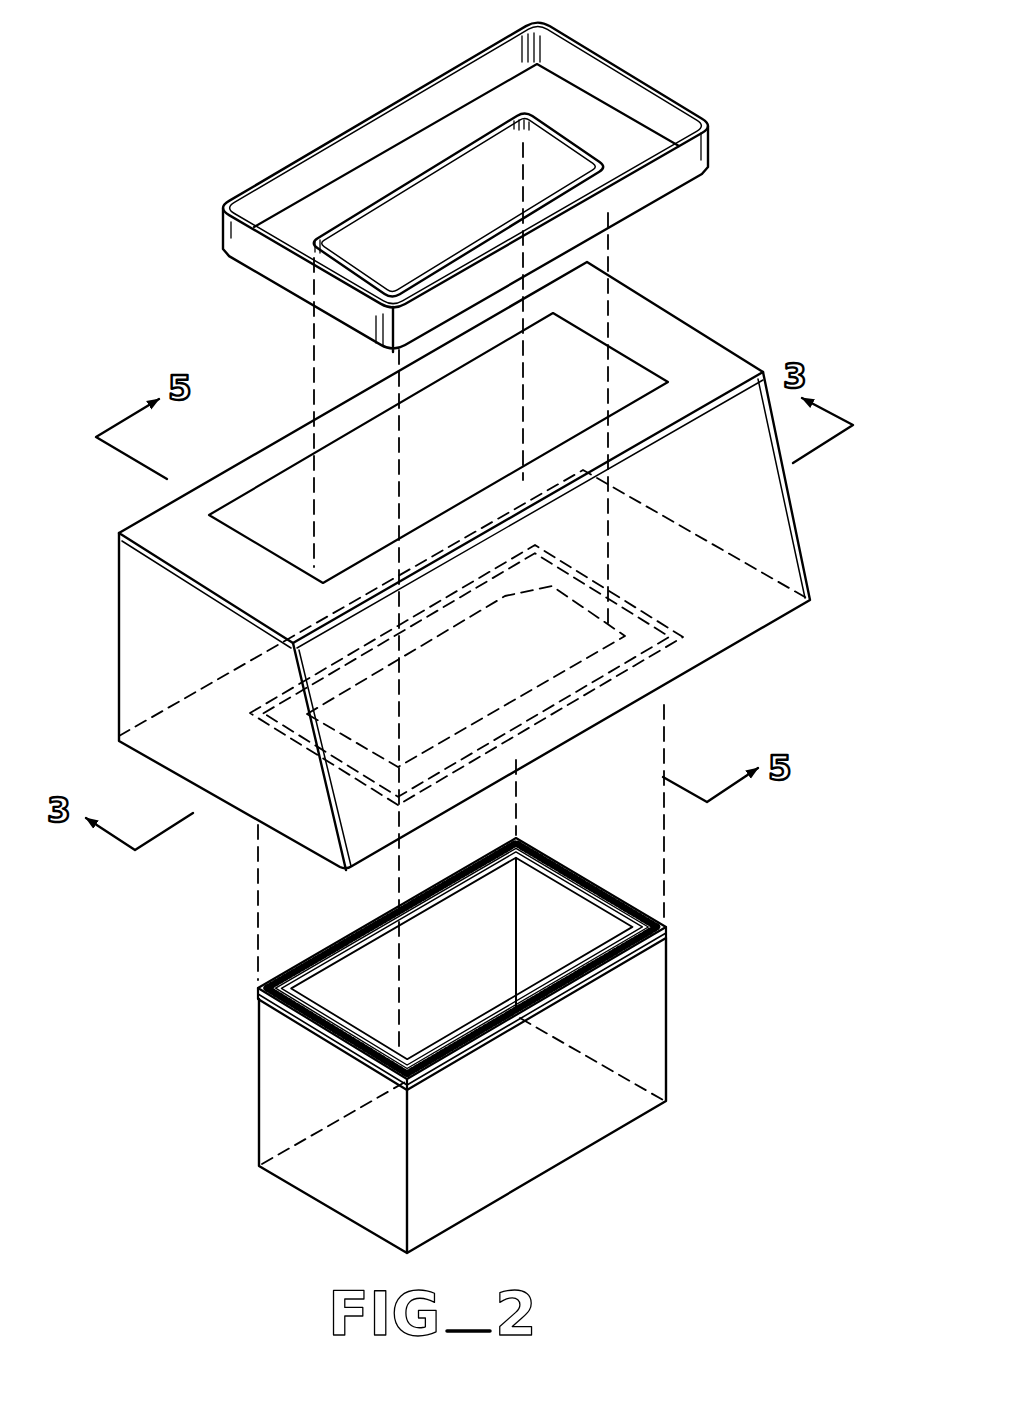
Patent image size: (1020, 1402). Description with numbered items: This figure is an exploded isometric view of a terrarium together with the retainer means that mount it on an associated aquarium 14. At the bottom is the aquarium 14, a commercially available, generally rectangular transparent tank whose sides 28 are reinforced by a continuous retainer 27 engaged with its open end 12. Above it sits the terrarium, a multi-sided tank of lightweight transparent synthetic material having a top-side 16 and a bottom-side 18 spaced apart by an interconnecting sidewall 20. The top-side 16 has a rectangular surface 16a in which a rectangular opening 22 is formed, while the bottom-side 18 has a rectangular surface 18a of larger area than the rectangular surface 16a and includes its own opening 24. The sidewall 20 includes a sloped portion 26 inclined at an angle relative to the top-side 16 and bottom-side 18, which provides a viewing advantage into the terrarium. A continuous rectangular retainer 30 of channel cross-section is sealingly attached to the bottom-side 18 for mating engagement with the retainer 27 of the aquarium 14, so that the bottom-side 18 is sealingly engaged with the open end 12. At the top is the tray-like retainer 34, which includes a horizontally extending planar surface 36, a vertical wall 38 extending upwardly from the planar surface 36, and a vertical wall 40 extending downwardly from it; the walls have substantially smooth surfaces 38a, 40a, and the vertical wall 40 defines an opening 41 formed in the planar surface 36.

The open end 12 is at (668, 931).
The aquarium 14 is at (469, 1045).
The top-side 16 is at (141, 519).
The rectangular surface 16a is at (262, 581).
The bottom-side 18 is at (139, 754).
The rectangular surface 18a is at (262, 774).
The sidewall 20 is at (447, 566).
The rectangular opening 22 is at (291, 479).
The opening 24 is at (447, 620).
The sloped portion 26 is at (798, 531).
The continuous retainer 27 is at (255, 987).
The sides 28 is at (370, 1180).
The continuous rectangular retainer 30 is at (650, 608).
The retainer 34 is at (525, 187).
The planar surface 36 is at (548, 110).
The vertical wall 38 is at (645, 82).
The smooth surface 38a is at (333, 157).
The vertical wall 40 is at (420, 188).
The smooth surface 40a is at (353, 218).
The opening 41 is at (462, 153).